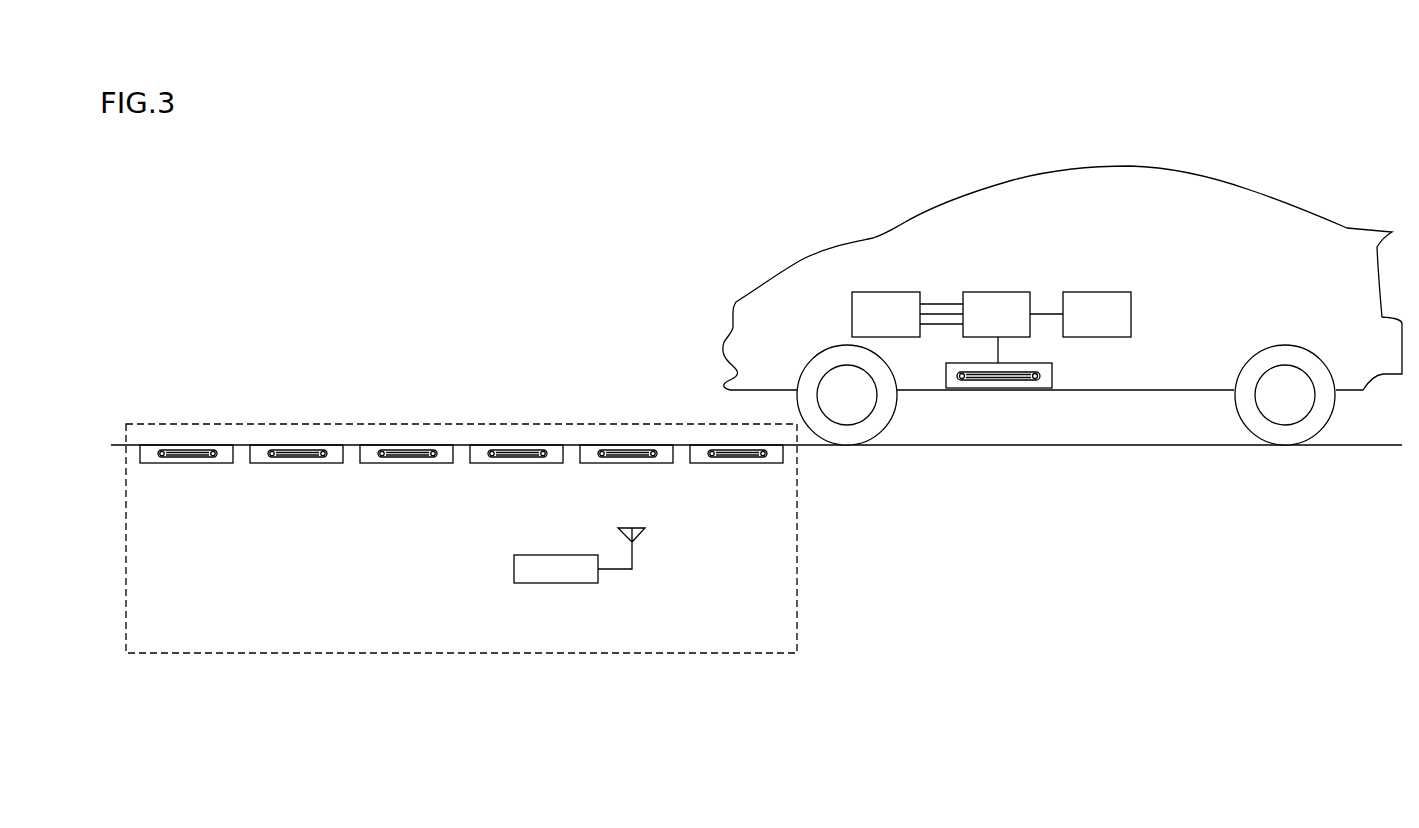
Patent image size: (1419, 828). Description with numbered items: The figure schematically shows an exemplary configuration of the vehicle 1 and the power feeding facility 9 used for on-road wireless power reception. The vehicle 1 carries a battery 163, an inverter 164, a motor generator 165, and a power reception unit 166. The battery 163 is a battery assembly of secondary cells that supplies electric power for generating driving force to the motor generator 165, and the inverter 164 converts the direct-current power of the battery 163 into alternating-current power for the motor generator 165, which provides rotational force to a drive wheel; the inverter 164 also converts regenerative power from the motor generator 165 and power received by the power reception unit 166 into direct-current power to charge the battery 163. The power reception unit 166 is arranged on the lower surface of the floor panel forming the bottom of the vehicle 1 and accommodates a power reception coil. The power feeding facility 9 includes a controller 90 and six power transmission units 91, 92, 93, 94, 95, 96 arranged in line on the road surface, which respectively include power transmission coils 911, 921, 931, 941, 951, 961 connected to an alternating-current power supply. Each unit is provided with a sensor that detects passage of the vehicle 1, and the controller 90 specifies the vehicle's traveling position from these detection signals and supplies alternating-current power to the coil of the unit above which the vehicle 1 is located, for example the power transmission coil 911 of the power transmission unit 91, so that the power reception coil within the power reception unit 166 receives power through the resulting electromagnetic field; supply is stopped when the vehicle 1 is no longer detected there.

The vehicle 1 is at (1288, 198).
The power feeding facility 9 is at (598, 424).
The controller 90 is at (570, 583).
The power transmission unit 91 is at (776, 465).
The power transmission coil 911 is at (739, 465).
The power transmission unit 92 is at (666, 465).
The power transmission coil 921 is at (629, 465).
The power transmission unit 93 is at (556, 465).
The power transmission coil 931 is at (519, 465).
The power transmission unit 94 is at (446, 465).
The power transmission coil 941 is at (409, 465).
The power transmission unit 95 is at (336, 465).
The power transmission coil 951 is at (299, 465).
The power transmission unit 96 is at (226, 465).
The power transmission coil 961 is at (189, 465).
The battery 163 is at (1095, 292).
The inverter 164 is at (995, 292).
The motor generator 165 is at (884, 292).
The power reception unit 166 is at (1001, 390).